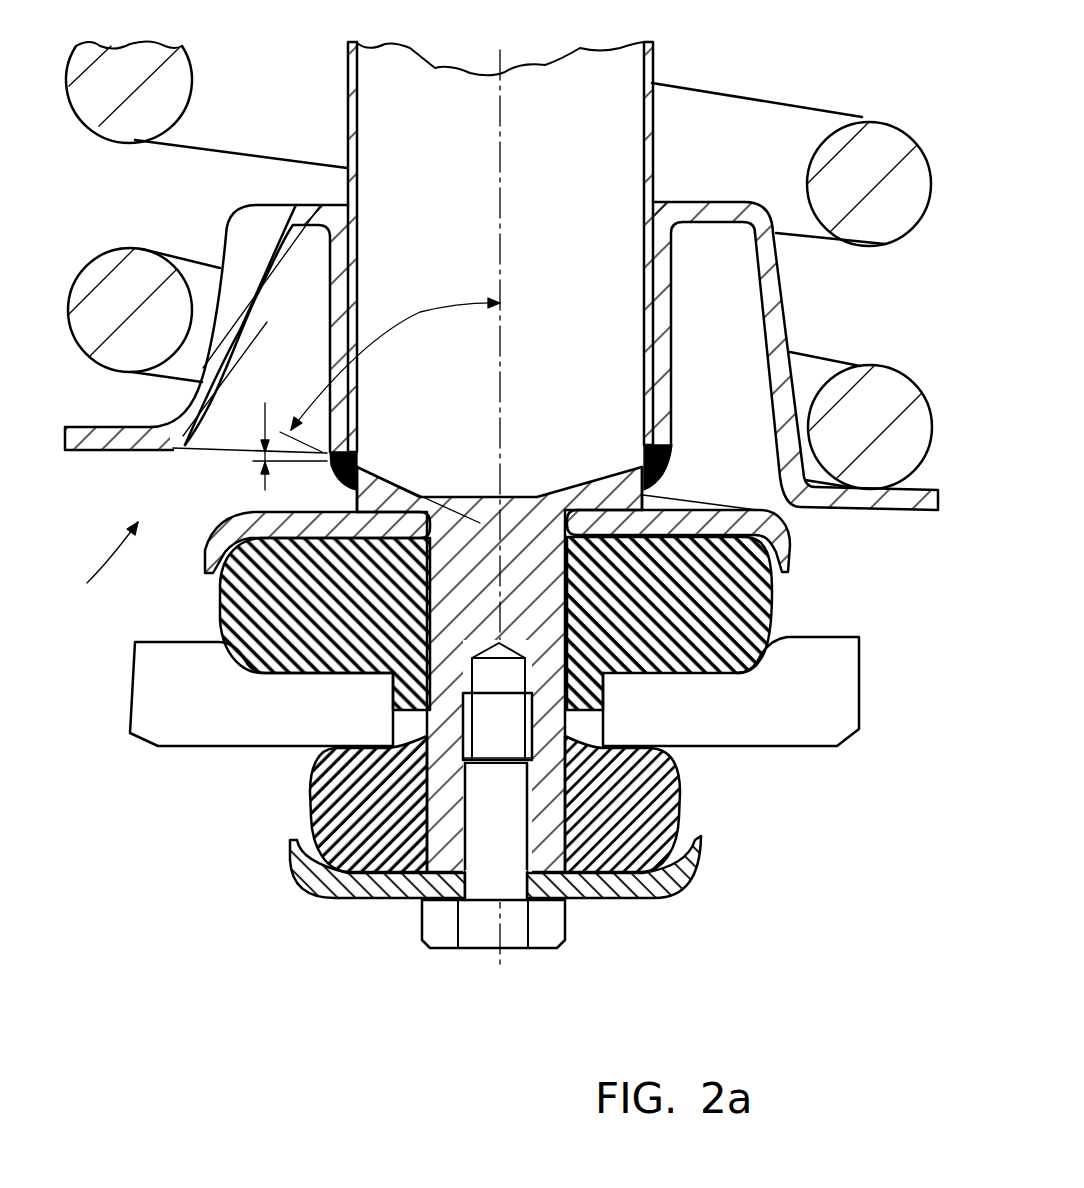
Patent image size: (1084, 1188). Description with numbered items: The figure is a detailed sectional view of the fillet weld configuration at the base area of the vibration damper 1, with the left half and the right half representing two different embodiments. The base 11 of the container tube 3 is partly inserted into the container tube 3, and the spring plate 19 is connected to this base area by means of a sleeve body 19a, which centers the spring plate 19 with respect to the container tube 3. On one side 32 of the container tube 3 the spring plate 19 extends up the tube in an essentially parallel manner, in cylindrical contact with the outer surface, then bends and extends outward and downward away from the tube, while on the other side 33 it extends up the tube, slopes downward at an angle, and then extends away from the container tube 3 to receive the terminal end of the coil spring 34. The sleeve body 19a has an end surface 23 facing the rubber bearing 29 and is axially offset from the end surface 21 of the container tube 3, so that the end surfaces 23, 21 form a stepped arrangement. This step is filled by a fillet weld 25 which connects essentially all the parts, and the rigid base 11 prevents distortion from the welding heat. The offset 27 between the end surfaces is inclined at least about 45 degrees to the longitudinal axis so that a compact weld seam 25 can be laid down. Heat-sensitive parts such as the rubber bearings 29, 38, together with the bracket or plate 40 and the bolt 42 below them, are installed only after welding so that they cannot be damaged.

The vibration damper 1 is at (100, 570).
The container tube 3 is at (652, 72).
The base 11 is at (458, 530).
The spring plate 19 is at (868, 515).
The sleeve body 19a is at (672, 307).
The end surface of the container tube 21 is at (652, 447).
The end surface of the sleeve body 23 is at (670, 453).
The fillet weld 25 is at (674, 485).
The offset 27 is at (248, 443).
The rubber bearing 29 is at (753, 598).
The side of the container tube 32 is at (623, 167).
The other side of the container tube 33 is at (375, 189).
The coil spring 34 is at (908, 237).
The rubber bearing 38 is at (310, 800).
The bracket or plate 40 is at (697, 877).
The bolt 42 is at (433, 948).
The angle 45 is at (390, 369).